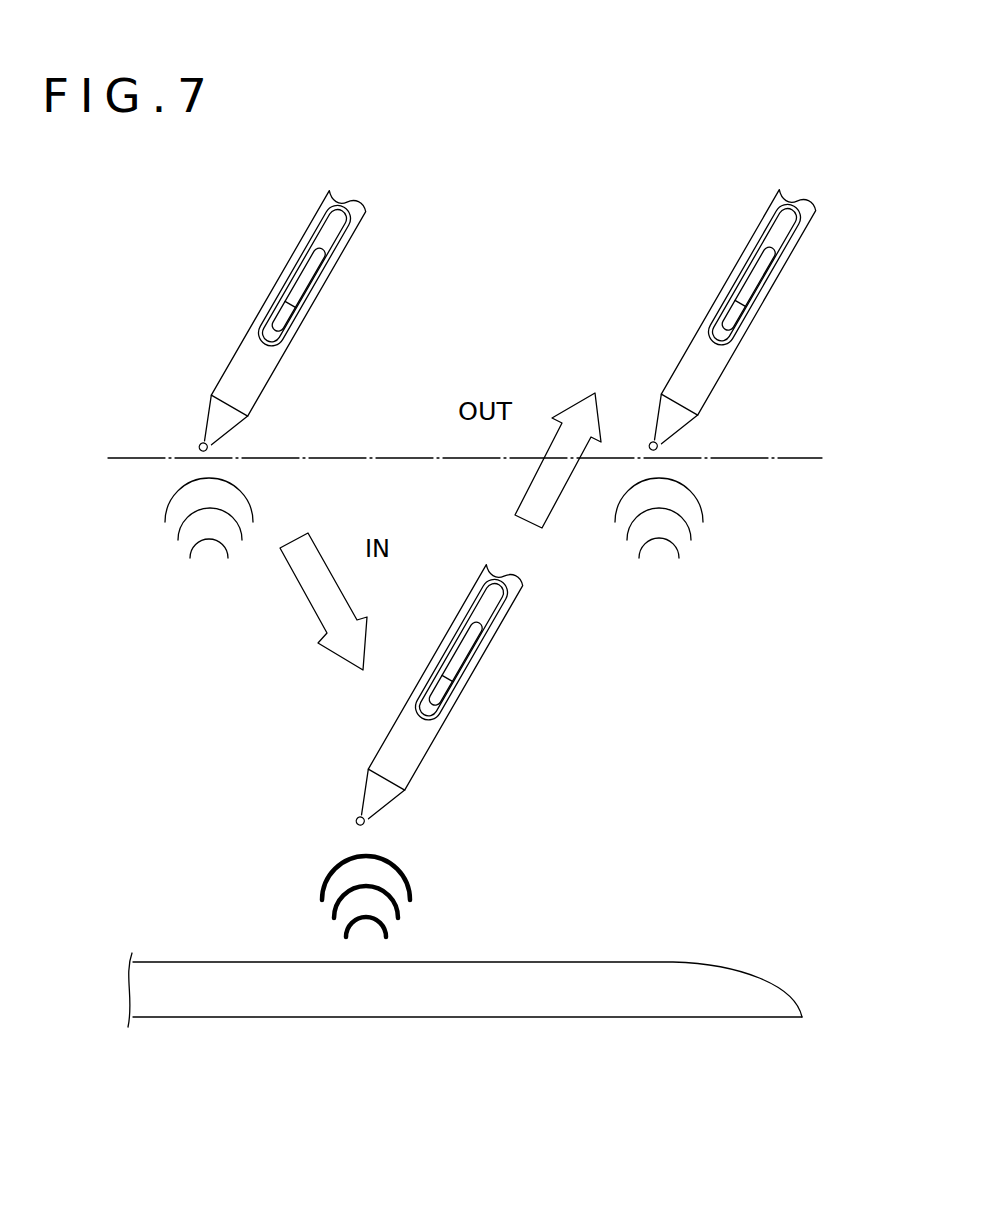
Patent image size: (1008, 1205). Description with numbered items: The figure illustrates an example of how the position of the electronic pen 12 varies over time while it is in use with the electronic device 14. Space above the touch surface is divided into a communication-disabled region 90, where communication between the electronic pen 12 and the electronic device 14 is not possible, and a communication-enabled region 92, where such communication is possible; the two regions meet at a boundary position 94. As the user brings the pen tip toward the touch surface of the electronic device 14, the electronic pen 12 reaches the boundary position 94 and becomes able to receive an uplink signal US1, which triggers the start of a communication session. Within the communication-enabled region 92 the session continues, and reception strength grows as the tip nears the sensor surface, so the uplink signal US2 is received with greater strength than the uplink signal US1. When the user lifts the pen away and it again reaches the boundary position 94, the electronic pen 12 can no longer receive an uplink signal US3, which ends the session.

The electronic pen 12 is at (338, 262).
The electronic device 14 is at (637, 983).
The communication-disabled region 90 is at (181, 280).
The communication-enabled region 92 is at (738, 741).
The boundary position 94 is at (140, 458).
The uplink signal US1 is at (180, 564).
The uplink signal US2 is at (331, 856).
The uplink signal US3 is at (705, 546).